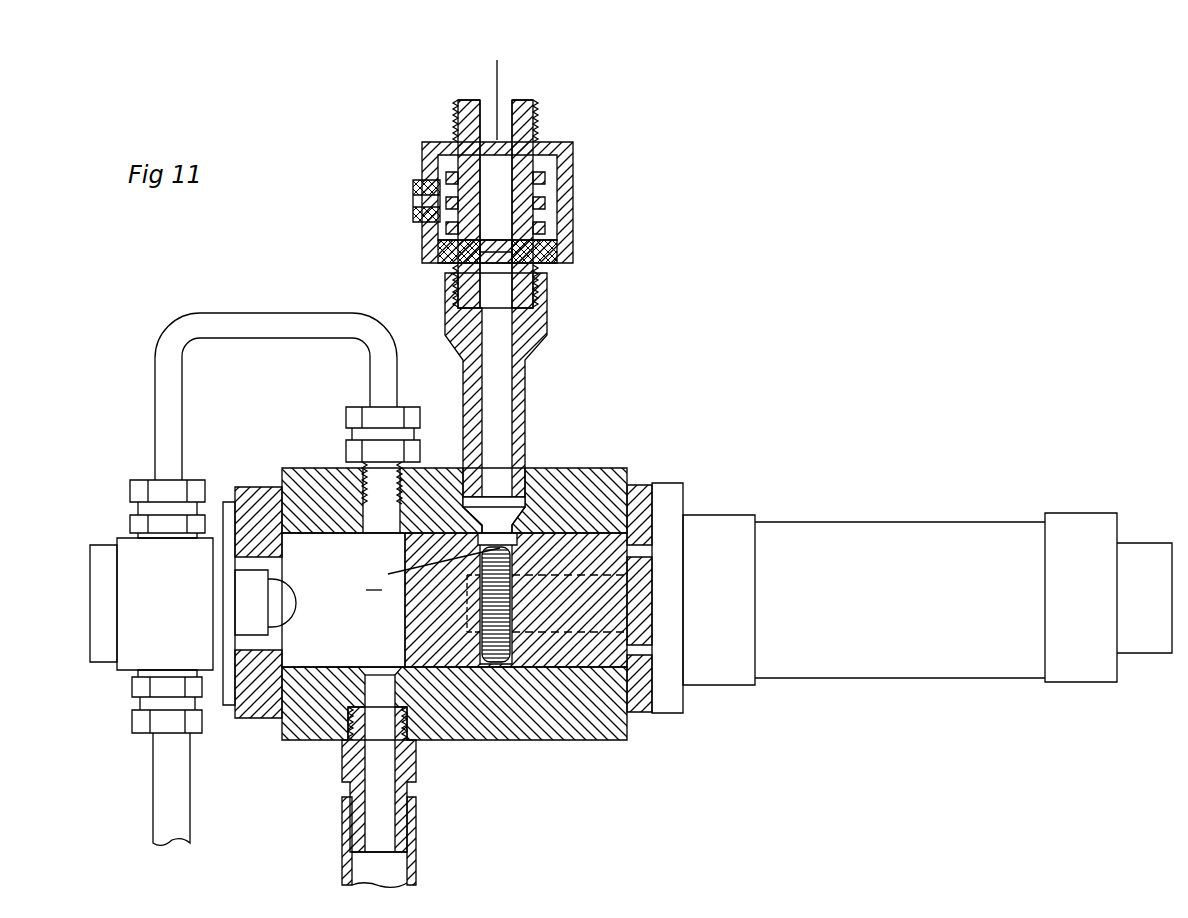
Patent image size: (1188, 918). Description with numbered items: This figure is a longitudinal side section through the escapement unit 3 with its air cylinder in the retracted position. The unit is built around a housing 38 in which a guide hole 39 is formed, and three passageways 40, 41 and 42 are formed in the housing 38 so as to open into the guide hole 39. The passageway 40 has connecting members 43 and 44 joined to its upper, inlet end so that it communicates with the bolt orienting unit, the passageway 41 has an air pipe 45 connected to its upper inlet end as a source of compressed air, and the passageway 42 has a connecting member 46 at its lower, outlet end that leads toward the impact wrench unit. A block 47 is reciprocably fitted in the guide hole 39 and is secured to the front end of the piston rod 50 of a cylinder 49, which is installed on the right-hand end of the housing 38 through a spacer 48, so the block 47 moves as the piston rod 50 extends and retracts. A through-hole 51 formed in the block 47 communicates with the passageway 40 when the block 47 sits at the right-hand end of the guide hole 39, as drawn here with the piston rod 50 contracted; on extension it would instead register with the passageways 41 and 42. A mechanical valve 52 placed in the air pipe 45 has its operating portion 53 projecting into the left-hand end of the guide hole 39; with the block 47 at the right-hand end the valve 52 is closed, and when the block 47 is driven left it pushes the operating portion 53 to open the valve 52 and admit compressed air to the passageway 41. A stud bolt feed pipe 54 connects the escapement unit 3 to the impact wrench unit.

The escapement unit 3 is at (801, 364).
The housing 38 is at (594, 484).
The guide hole 39 is at (297, 539).
The passageway 40 is at (507, 521).
The passageway 41 is at (371, 518).
The passageway 42 is at (373, 693).
The connecting member 43 is at (574, 218).
The connecting member 44 is at (549, 322).
The air pipe 45 is at (289, 318).
The connecting member 46 is at (417, 762).
The block 47 is at (591, 549).
The spacer 48 is at (674, 504).
The cylinder 49 is at (855, 522).
The piston rod 50 is at (592, 624).
The through-hole 51 is at (481, 603).
The mechanical valve 52 is at (128, 604).
The operating portion 53 is at (297, 597).
The stud bolt feed pipe 54 is at (417, 862).